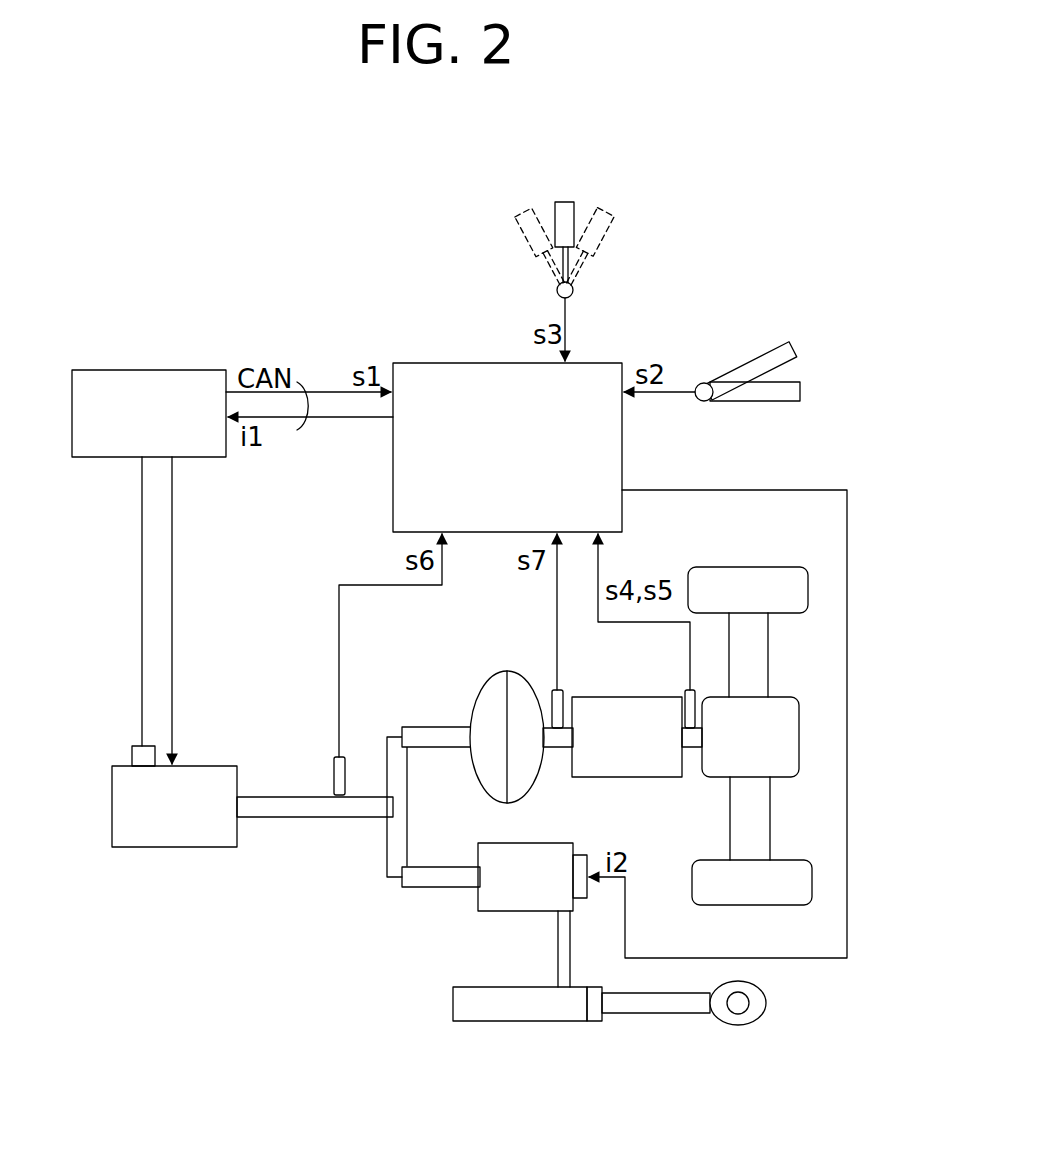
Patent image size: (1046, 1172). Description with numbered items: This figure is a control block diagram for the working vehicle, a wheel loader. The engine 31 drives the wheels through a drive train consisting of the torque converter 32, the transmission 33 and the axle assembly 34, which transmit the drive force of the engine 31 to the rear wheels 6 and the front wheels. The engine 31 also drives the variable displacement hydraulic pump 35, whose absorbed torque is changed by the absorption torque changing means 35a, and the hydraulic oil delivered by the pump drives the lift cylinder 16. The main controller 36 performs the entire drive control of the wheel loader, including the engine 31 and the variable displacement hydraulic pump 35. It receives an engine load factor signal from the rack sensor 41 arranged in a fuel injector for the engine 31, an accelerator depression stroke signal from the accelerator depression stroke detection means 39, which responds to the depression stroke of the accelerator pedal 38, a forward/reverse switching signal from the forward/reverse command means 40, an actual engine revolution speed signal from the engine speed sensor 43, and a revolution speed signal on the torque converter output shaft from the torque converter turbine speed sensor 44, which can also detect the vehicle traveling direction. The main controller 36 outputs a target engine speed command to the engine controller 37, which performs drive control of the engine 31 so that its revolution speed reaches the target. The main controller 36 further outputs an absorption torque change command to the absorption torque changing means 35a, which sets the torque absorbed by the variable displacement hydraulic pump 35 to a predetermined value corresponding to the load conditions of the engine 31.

The main controller 36 is at (440, 382).
The engine controller 37 is at (107, 375).
The forward/reverse command means 40 is at (535, 234).
The accelerator pedal 38 is at (777, 348).
The accelerator depression stroke detection means 39 is at (700, 384).
The engine 31 is at (136, 834).
The rack sensor 41 is at (140, 750).
The engine speed sensor 43 is at (334, 768).
The torque converter 32 is at (492, 697).
The torque converter turbine speed sensor 44 is at (554, 692).
The transmission 33 is at (626, 708).
The axle assembly 34 is at (720, 780).
The rear wheels 6 is at (714, 580).
The variable displacement hydraulic pump 35 is at (501, 902).
The absorption torque changing means 35a is at (584, 854).
The lift cylinder 16 is at (494, 1024).